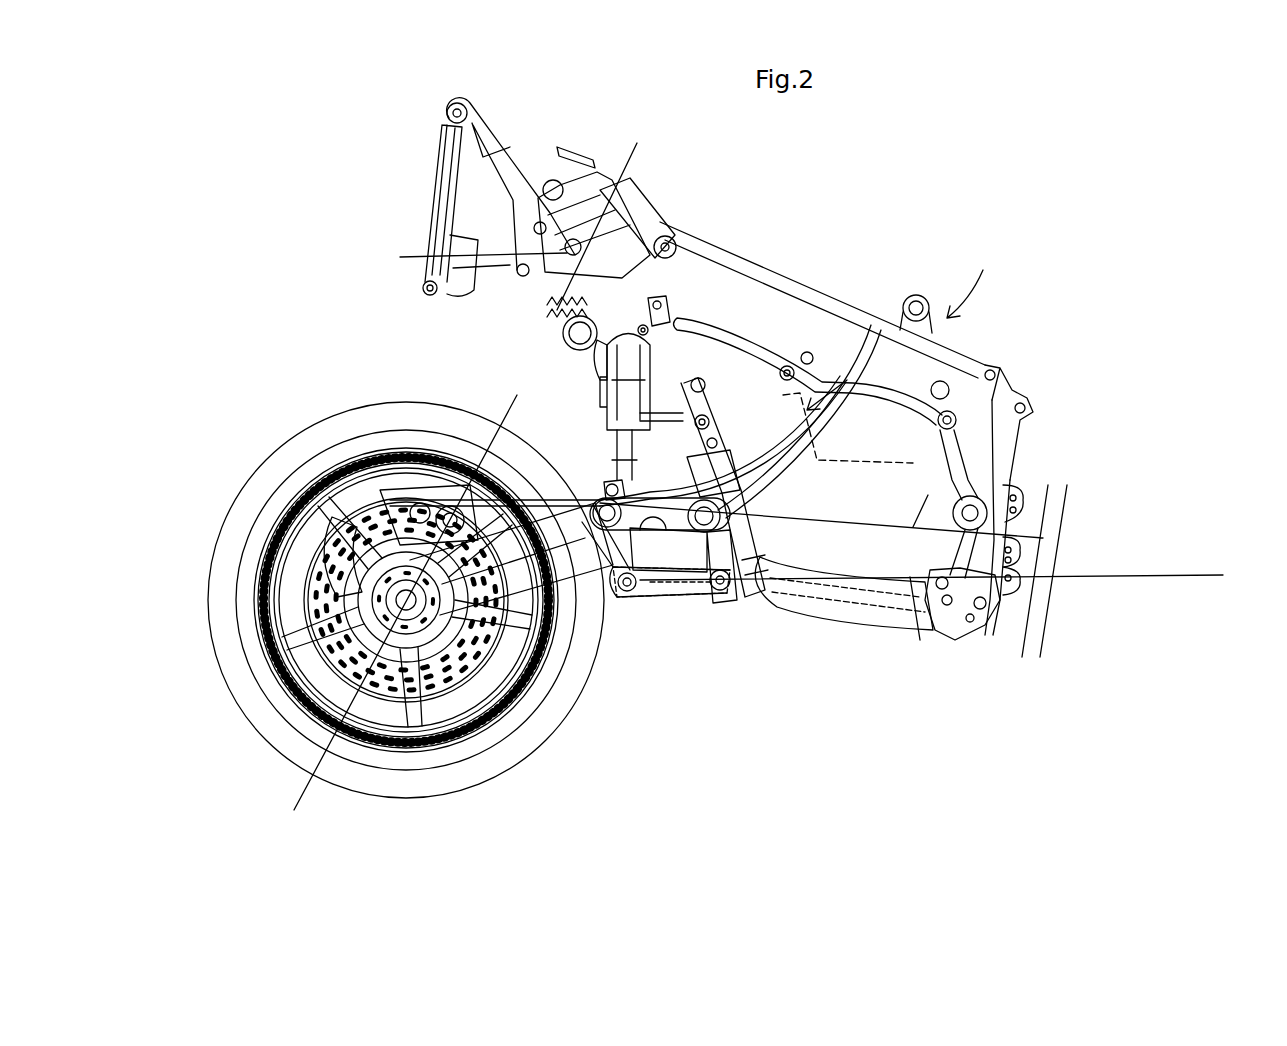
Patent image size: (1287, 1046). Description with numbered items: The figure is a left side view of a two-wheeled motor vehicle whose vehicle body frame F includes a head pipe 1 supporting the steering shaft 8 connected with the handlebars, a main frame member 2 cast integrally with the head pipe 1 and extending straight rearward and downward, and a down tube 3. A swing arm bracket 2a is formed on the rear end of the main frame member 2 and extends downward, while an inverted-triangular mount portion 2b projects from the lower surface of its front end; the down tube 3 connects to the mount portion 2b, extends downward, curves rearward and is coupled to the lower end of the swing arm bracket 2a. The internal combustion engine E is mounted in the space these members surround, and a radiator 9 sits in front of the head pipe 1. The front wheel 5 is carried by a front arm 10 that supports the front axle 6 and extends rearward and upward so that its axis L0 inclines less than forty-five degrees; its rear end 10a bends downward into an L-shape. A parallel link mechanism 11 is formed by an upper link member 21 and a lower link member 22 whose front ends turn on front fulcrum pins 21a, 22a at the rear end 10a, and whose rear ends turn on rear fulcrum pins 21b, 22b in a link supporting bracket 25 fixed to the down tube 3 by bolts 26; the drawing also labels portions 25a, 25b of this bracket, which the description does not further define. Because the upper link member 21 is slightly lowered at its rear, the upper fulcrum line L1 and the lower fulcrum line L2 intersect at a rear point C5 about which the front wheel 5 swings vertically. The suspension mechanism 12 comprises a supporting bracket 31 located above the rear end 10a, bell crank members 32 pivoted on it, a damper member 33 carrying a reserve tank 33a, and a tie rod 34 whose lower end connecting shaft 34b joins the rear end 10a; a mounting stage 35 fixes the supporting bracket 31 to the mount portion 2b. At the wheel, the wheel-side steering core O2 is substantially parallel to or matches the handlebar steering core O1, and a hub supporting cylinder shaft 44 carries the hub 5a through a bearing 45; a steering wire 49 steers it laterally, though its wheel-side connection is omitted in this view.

The head pipe 1 is at (430, 265).
The main frame member 2 is at (815, 332).
The swing arm bracket 2a is at (962, 552).
The mount portion 2b is at (741, 397).
The down tube 3 is at (752, 540).
The front wheel 5 is at (280, 473).
The hub 5a is at (345, 570).
The front axle 6 is at (282, 708).
The steering shaft 8 is at (625, 178).
The radiator 9 is at (427, 256).
The front arm 10 is at (535, 640).
The rear end 10a is at (585, 600).
The parallel link mechanism 11 is at (722, 610).
The suspension mechanism 12 is at (706, 304).
The upper link member 21 is at (660, 500).
The front fulcrum pin 21a is at (508, 402).
The rear fulcrum pin 21b is at (733, 508).
The lower link member 22 is at (688, 605).
The front fulcrum pin 22a is at (628, 593).
The rear fulcrum pin 22b is at (743, 600).
The link supporting bracket 25 is at (748, 510).
The connecting member lower end 25a is at (767, 563).
The connecting member upper end 25b is at (701, 414).
The bolt 26 is at (707, 553).
The supporting bracket 31 is at (610, 387).
The bell crank member 32 is at (630, 390).
The damper member 33 is at (603, 362).
The reserve tank 33a is at (575, 336).
The tie rod 34 is at (610, 430).
The lower end connecting shaft 34b is at (612, 482).
The mounting stage 35 is at (662, 372).
The hub supporting cylinder shaft 44 is at (500, 725).
The bearing 45 is at (448, 727).
The steering wire 49 is at (830, 428).
The core of the handlebars-side steering shaft O1 is at (640, 150).
The core of the wheel-side steering shaft O2 is at (296, 803).
The rear intersection point C5 is at (1220, 580).
The internal combustion engine E is at (857, 380).
The vehicle body frame F is at (966, 277).
The axis of the front arm L0 is at (345, 436).
The line connecting the front and rear upper fulcrums L1 is at (928, 495).
The line connecting the front and rear lower fulcrums L2 is at (923, 624).